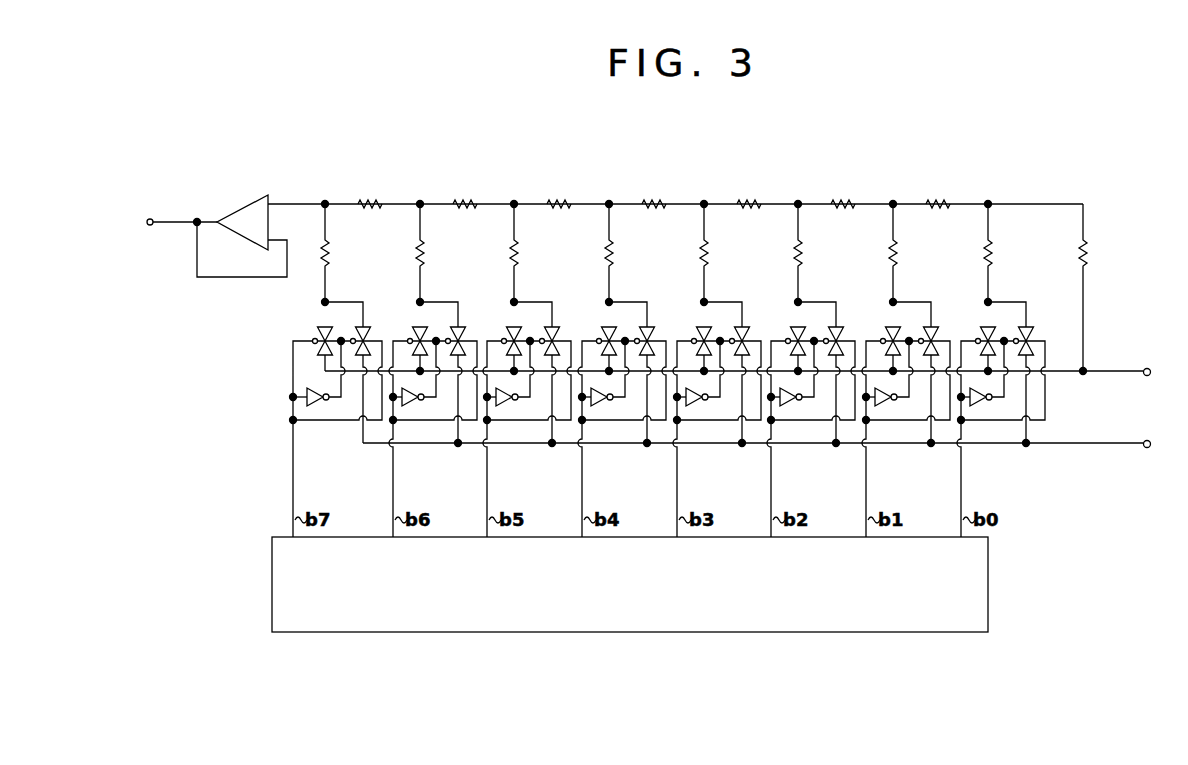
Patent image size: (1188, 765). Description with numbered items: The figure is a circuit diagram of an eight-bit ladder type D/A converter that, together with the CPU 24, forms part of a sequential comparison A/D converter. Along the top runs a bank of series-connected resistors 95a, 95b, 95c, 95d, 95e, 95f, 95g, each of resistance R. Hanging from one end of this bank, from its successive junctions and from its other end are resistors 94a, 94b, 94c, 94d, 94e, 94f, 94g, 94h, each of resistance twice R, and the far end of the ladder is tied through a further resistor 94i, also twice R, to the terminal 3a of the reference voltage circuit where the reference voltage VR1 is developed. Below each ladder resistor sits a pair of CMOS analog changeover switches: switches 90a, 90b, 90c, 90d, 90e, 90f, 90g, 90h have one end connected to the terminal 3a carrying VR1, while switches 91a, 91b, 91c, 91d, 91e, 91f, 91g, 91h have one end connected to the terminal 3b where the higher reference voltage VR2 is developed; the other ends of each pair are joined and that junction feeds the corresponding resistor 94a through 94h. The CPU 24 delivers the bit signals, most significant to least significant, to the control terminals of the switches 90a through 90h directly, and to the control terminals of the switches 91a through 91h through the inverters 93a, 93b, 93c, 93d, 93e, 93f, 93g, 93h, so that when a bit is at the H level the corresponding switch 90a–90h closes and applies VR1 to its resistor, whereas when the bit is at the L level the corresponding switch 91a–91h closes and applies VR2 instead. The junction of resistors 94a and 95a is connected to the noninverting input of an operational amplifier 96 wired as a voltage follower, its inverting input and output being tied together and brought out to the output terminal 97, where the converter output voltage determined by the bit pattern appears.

The operational amplifier 96 is at (238, 218).
The output terminal 97 is at (152, 233).
The CPU 24 is at (988, 577).
The terminal of the reference voltage circuit 3a is at (1145, 370).
The terminal of the reference voltage circuit 3b is at (1145, 443).
The resistor 94a is at (329, 251).
The resistor 94b is at (445, 253).
The resistor 94c is at (539, 253).
The resistor 94d is at (634, 253).
The resistor 94e is at (729, 253).
The resistor 94f is at (821, 253).
The resistor 94g is at (918, 253).
The resistor 94h is at (1013, 253).
The resistor 94i is at (1087, 251).
The resistor 95a is at (371, 200).
The resistor 95b is at (470, 188).
The resistor 95c is at (563, 188).
The resistor 95d is at (659, 188).
The resistor 95e is at (754, 188).
The resistor 95f is at (846, 188).
The resistor 95g is at (943, 188).
The changeover switch 90a is at (315, 325).
The changeover switch 90b is at (398, 331).
The changeover switch 90c is at (492, 331).
The changeover switch 90d is at (587, 331).
The changeover switch 90e is at (682, 331).
The changeover switch 90f is at (776, 331).
The changeover switch 90g is at (871, 331).
The changeover switch 90h is at (966, 331).
The changeover switch 91a is at (356, 327).
The changeover switch 91b is at (471, 319).
The changeover switch 91c is at (564, 319).
The changeover switch 91d is at (660, 319).
The changeover switch 91e is at (755, 319).
The changeover switch 91f is at (847, 319).
The changeover switch 91g is at (944, 319).
The changeover switch 91h is at (1044, 331).
The inverter 93a is at (317, 403).
The inverter 93b is at (425, 404).
The inverter 93c is at (518, 404).
The inverter 93d is at (614, 404).
The inverter 93e is at (709, 404).
The inverter 93f is at (801, 404).
The inverter 93g is at (898, 404).
The inverter 93h is at (993, 404).